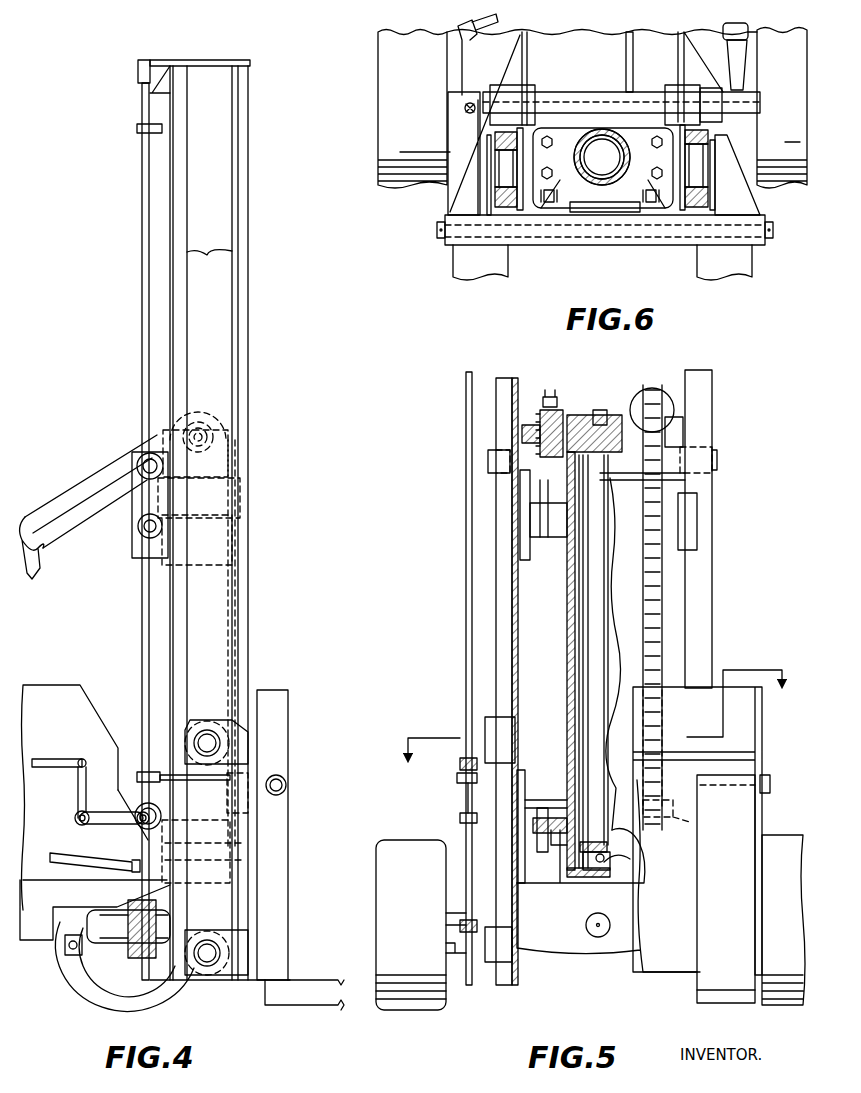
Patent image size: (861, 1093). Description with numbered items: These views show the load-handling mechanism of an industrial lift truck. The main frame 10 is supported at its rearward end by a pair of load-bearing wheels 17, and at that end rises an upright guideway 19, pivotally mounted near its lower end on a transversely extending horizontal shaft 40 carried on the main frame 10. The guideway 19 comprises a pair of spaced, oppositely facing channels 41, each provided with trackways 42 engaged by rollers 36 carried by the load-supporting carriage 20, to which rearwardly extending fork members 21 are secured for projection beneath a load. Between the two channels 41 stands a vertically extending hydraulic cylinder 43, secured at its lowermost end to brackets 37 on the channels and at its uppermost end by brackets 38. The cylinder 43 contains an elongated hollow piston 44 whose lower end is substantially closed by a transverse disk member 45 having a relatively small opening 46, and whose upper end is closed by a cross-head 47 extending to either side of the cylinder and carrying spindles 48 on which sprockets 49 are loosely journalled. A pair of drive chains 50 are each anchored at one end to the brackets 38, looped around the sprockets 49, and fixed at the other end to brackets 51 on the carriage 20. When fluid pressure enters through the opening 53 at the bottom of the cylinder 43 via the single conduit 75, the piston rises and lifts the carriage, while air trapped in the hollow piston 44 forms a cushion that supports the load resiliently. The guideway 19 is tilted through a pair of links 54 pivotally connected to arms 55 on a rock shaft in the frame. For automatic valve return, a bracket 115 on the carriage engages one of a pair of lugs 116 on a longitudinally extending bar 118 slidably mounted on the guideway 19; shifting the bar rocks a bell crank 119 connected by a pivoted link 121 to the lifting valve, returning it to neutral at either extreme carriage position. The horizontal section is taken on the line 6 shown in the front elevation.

In FIG. 5, the section line 6 is at (594, 741).
In FIG. 4, the main frame 10 is at (95, 820).
In FIG. 6, the main frame 10 is at (602, 43).
In FIG. 5, the main frame 10 is at (608, 725).
In FIG. 4, the load-bearing wheels 17 is at (105, 985).
In FIG. 6, the load-bearing wheels 17 is at (592, 108).
In FIG. 5, the load-bearing wheels 17 is at (590, 922).
In FIG. 4, the upright guideway 19 is at (220, 520).
In FIG. 6, the upright guideway 19 is at (494, 140).
In FIG. 5, the upright guideway 19 is at (498, 410).
In FIG. 4, the load-supporting carriage 20 is at (245, 772).
In FIG. 6, the load-supporting carriage 20 is at (446, 215).
In FIG. 5, the load-supporting carriage 20 is at (762, 750).
In FIG. 4, the fork members 21 is at (318, 985).
In FIG. 6, the fork members 21 is at (492, 283).
In FIG. 5, the fork members 21 is at (700, 998).
In FIG. 4, the rollers 36 is at (190, 730).
In FIG. 6, the rollers 36 is at (505, 212).
In FIG. 5, the rollers 36 is at (515, 727).
In FIG. 4, the brackets 37 is at (123, 873).
In FIG. 6, the brackets 37 is at (542, 124).
In FIG. 5, the brackets 37 is at (538, 788).
In FIG. 4, the brackets 38 is at (132, 536).
In FIG. 5, the brackets 38 is at (526, 542).
In FIG. 4, the horizontal shaft 40 is at (143, 826).
In FIG. 6, the horizontal shaft 40 is at (627, 100).
In FIG. 5, the horizontal shaft 40 is at (542, 816).
In FIG. 4, the channels 41 is at (248, 378).
In FIG. 6, the channels 41 is at (520, 214).
In FIG. 5, the channels 41 is at (496, 540).
In FIG. 4, the trackways 42 is at (209, 266).
In FIG. 6, the trackways 42 is at (490, 160).
In FIG. 6, the hydraulic cylinder 43 is at (564, 134).
In FIG. 5, the hydraulic cylinder 43 is at (567, 655).
In FIG. 6, the hollow piston 44 is at (602, 157).
In FIG. 5, the hollow piston 44 is at (580, 618).
In FIG. 5, the transverse disk member 45 is at (589, 842).
In FIG. 5, the opening 46 is at (620, 850).
In FIG. 5, the cross-head 47 is at (588, 418).
In FIG. 5, the spindles 48 is at (553, 430).
In FIG. 5, the sprockets 49 is at (562, 406).
In FIG. 4, the drive chains 50 is at (240, 403).
In FIG. 6, the drive chains 50 is at (552, 214).
In FIG. 5, the drive chains 50 is at (550, 394).
In FIG. 6, the brackets 51 is at (605, 210).
In FIG. 5, the brackets 51 is at (680, 808).
In FIG. 5, the opening 53 is at (599, 866).
In FIG. 4, the links 54 is at (98, 492).
In FIG. 4, the arms 55 is at (40, 566).
In FIG. 4, the conduit 75 is at (90, 862).
In FIG. 6, the conduit 75 is at (608, 94).
In FIG. 4, the bracket 115 is at (150, 740).
In FIG. 6, the bracket 115 is at (468, 148).
In FIG. 4, the lugs 116 is at (137, 778).
In FIG. 5, the lugs 116 is at (462, 785).
In FIG. 4, the bar 118 is at (142, 644).
In FIG. 6, the bar 118 is at (464, 108).
In FIG. 5, the bar 118 is at (466, 672).
In FIG. 4, the bell crank 119 is at (78, 796).
In FIG. 6, the bell crank 119 is at (460, 78).
In FIG. 4, the link 121 is at (59, 753).